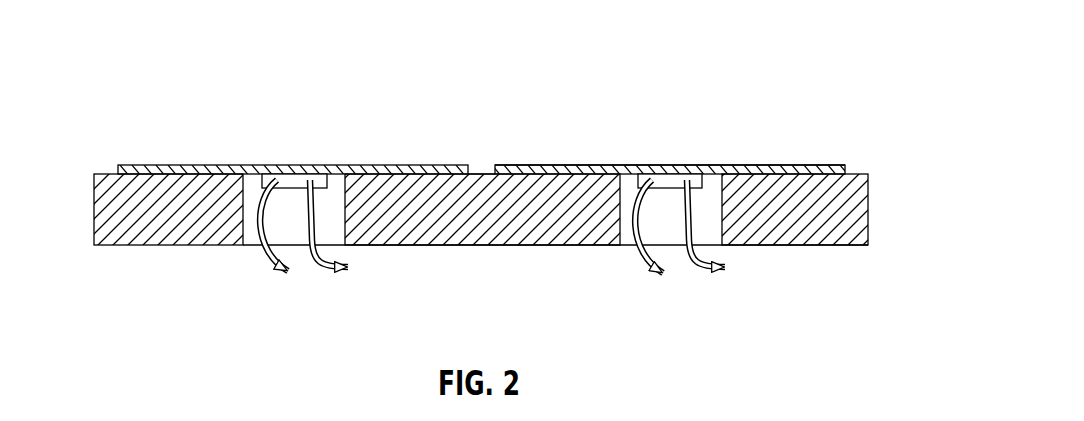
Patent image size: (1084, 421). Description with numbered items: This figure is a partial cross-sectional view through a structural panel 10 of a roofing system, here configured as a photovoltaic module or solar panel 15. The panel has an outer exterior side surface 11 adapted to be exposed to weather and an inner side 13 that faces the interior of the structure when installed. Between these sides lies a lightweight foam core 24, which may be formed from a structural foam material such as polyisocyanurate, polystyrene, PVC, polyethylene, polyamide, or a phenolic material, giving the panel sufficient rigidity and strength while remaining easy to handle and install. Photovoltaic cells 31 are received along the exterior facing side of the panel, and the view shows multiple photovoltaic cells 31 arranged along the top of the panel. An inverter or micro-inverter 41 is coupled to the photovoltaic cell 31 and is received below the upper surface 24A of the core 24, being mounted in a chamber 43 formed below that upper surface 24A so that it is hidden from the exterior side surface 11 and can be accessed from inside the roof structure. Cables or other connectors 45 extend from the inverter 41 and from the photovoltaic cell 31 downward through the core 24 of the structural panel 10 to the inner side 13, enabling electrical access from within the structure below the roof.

The structural panel 10 is at (499, 205).
The exterior side surface 11 is at (518, 165).
The inner side 13 is at (490, 245).
The solar panel 15 is at (823, 259).
The core 24 is at (858, 208).
The upper surface of the core 24A is at (423, 173).
The photovoltaic cell 31 is at (226, 158).
The inverter 41 is at (322, 175).
The chamber 43 is at (235, 225).
The cables 45 is at (275, 268).